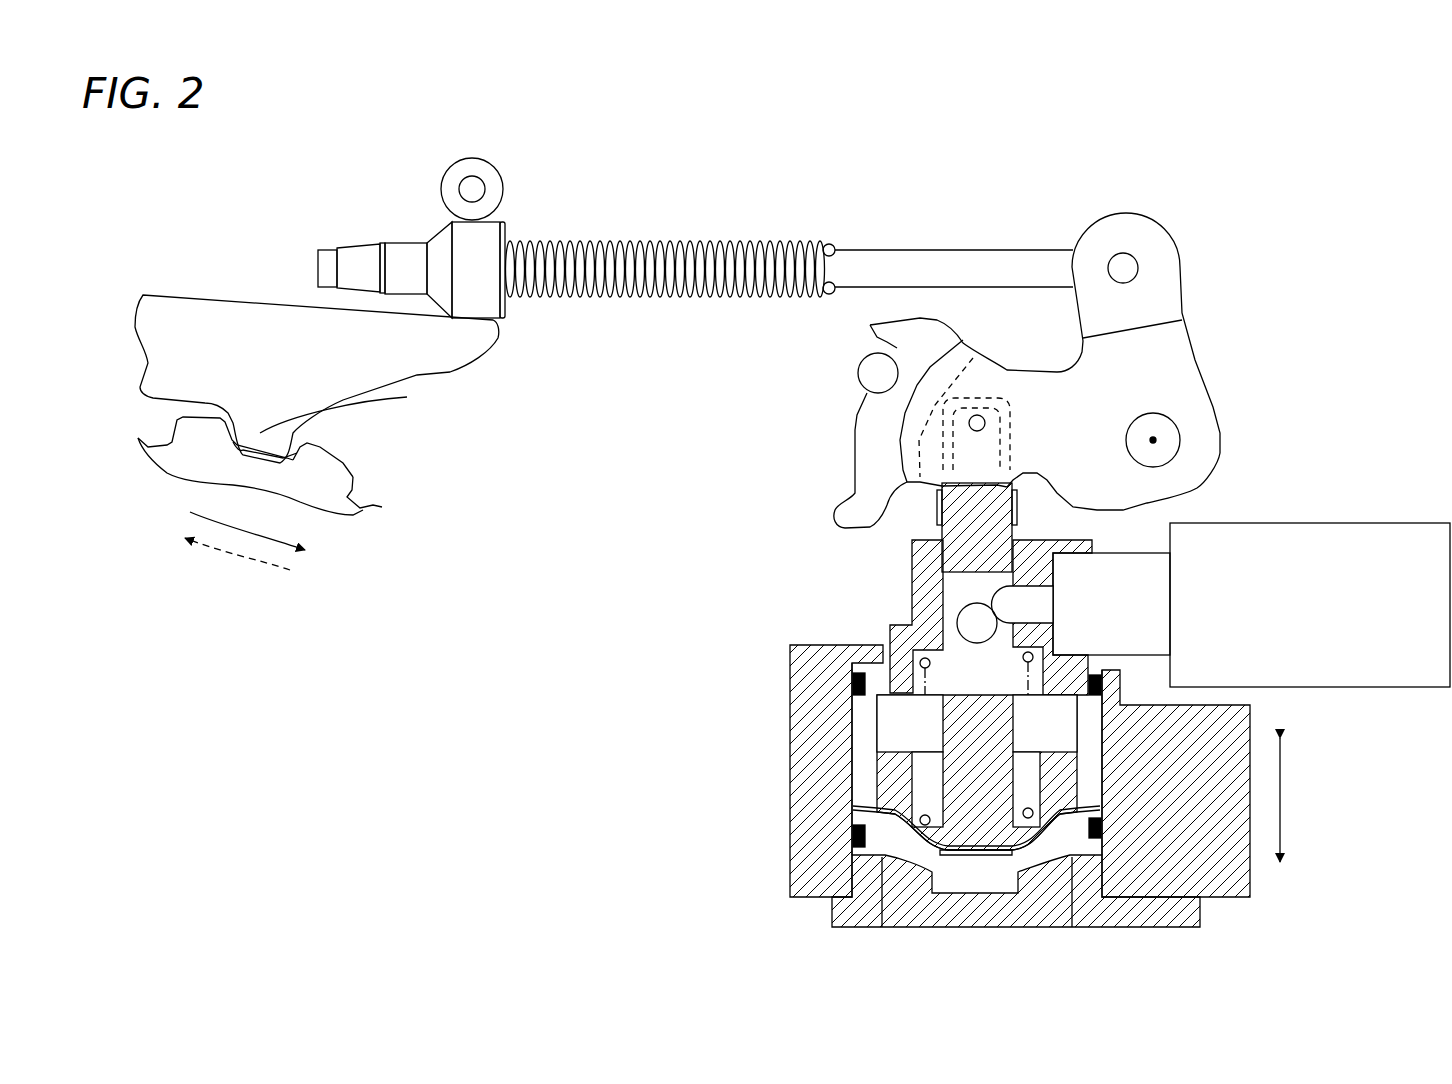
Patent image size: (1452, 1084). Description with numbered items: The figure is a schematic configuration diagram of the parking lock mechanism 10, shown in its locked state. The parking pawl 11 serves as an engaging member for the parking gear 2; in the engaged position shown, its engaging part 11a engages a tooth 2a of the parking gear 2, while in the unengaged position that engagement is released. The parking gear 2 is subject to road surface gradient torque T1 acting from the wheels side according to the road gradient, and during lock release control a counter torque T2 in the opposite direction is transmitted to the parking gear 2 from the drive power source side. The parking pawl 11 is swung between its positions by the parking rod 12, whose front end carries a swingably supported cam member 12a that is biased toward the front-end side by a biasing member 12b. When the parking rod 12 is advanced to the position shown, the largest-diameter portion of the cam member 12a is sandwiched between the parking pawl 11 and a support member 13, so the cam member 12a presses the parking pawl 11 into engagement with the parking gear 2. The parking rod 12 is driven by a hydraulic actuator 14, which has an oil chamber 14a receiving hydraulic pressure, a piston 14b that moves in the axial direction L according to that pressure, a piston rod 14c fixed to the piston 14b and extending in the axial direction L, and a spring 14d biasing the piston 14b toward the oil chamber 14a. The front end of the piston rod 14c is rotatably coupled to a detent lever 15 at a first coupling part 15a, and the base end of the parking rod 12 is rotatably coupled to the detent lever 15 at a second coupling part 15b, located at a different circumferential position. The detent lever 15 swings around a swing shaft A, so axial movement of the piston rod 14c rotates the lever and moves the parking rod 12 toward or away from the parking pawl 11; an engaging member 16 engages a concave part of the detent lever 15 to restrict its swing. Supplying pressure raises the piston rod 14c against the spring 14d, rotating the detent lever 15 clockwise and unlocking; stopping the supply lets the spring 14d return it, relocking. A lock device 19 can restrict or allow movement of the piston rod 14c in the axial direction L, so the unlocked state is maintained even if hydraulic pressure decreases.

The parking lock mechanism 10 is at (1265, 175).
The parking pawl 11 is at (205, 312).
The engaging part 11a is at (263, 433).
The parking gear 2 is at (365, 490).
The tooth 2a is at (327, 455).
The road surface gradient torque T1 is at (208, 512).
The counter torque T2 is at (267, 557).
The parking rod 12 is at (890, 257).
The cam member 12a is at (497, 226).
The biasing member 12b is at (585, 290).
The support member 13 is at (456, 172).
The hydraulic actuator 14 is at (787, 862).
The oil chamber 14a is at (877, 810).
The piston 14b is at (887, 745).
The piston rod 14c is at (945, 555).
The spring 14d is at (866, 690).
The detent lever 15 is at (1182, 342).
The first coupling part 15a is at (985, 432).
The second coupling part 15b is at (1123, 253).
The engaging member 16 is at (850, 375).
The lock device 19 is at (1315, 523).
The swing shaft A is at (1153, 440).
The axial direction L is at (1292, 800).